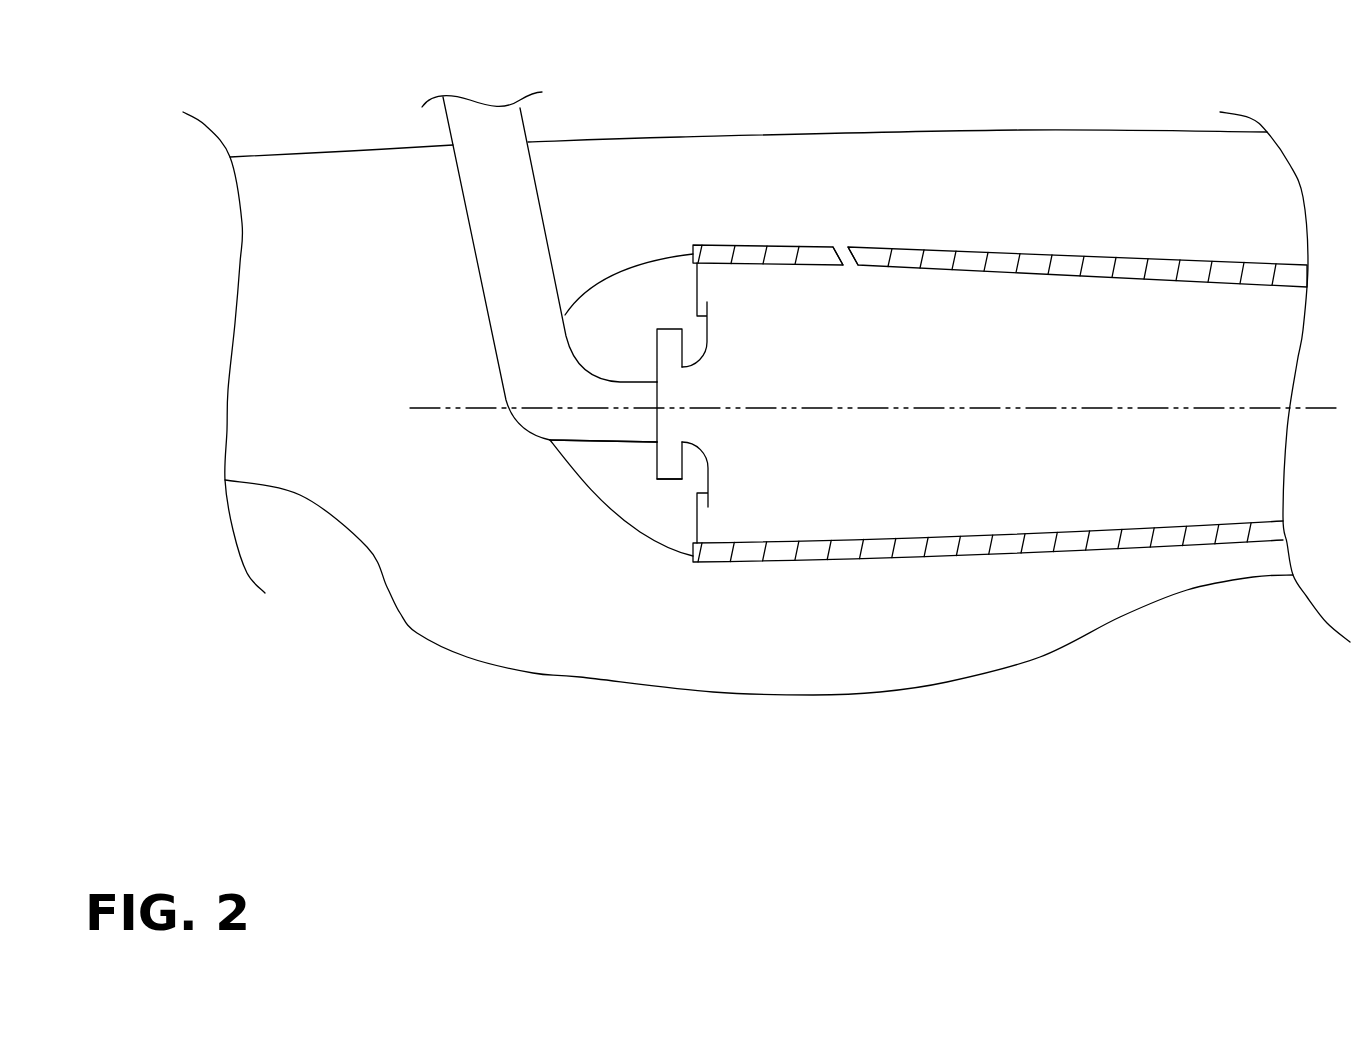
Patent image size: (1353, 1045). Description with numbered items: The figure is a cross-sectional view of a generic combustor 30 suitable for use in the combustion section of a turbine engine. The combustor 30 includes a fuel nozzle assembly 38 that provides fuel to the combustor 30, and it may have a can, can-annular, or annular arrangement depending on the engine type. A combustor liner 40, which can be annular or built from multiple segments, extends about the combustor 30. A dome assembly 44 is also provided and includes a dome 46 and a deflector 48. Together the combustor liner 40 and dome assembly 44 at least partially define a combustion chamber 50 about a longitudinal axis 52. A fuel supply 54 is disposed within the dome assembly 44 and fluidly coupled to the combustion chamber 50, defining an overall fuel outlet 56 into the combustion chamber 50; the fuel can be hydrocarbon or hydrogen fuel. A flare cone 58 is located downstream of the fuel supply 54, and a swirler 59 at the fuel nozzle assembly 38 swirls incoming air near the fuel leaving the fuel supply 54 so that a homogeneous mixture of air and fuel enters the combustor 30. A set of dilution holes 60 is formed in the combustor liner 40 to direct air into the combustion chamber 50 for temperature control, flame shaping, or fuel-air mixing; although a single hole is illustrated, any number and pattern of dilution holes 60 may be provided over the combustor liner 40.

The combustor 30 is at (1132, 163).
The fuel nozzle assembly 38 is at (628, 458).
The combustor liner 40 is at (1002, 545).
The dome assembly 44 is at (560, 446).
The dome 46 is at (627, 268).
The deflector 48 is at (697, 520).
The combustion chamber 50 is at (1170, 303).
The longitudinal axis 52 is at (977, 408).
The fuel supply 54 is at (510, 415).
The fuel outlet 56 is at (688, 422).
The flare cone 58 is at (707, 351).
The swirler 59 is at (667, 479).
The set of dilution holes 60 is at (842, 243).